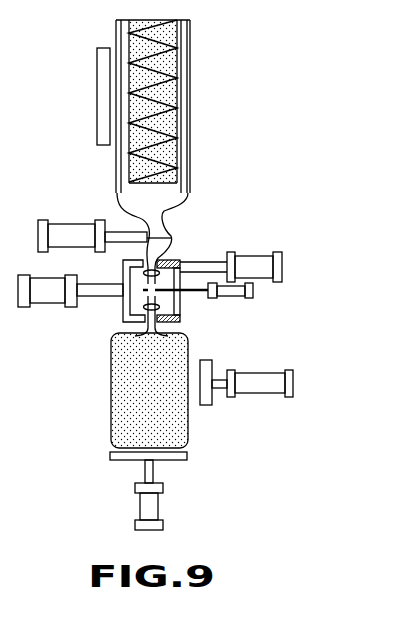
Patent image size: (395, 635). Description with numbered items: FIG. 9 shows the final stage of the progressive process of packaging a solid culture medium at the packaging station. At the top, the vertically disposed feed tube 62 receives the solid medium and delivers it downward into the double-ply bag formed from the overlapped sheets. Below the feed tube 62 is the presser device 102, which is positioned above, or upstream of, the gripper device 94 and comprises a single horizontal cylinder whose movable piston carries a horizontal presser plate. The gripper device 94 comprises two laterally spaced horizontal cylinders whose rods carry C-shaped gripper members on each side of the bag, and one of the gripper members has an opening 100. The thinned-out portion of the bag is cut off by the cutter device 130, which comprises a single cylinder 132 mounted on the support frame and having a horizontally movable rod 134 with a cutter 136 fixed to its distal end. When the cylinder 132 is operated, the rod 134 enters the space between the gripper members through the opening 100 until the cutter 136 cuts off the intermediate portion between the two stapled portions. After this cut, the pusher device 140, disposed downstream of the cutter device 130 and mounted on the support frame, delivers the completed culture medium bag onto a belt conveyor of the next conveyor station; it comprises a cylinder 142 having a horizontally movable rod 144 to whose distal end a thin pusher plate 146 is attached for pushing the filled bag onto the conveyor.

The feed tube 62 is at (188, 54).
The presser device 102 is at (70, 212).
The gripper device 94 is at (48, 317).
The cutter 136 is at (162, 282).
The cylinder 132 is at (237, 283).
The rod 134 is at (195, 294).
The cutter device 130 is at (261, 306).
The opening 100 is at (180, 304).
The cylinder 142 is at (262, 395).
The rod 144 is at (222, 395).
The pusher plate 146 is at (206, 407).
The pusher device 140 is at (265, 416).